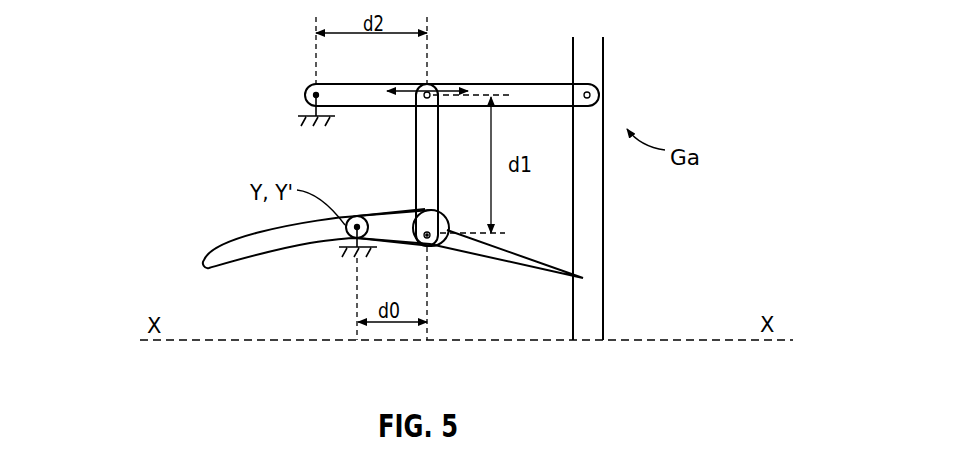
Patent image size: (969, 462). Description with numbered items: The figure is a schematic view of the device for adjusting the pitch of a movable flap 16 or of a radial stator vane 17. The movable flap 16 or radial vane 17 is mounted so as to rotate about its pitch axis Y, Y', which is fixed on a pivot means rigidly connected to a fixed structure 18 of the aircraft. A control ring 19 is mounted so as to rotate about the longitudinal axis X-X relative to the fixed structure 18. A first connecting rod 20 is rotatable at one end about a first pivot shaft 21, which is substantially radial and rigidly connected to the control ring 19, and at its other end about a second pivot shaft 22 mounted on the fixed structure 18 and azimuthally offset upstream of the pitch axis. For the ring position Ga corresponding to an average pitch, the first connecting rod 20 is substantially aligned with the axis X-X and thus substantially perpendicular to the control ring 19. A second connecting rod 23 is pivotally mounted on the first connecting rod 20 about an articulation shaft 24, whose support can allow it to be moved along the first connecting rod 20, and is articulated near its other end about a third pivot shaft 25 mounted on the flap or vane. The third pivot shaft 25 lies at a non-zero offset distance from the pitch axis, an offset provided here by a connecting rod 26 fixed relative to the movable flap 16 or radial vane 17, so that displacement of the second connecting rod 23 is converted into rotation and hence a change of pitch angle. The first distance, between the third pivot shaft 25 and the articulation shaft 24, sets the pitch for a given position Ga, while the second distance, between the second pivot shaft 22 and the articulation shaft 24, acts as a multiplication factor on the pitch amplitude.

The movable flap 16 is at (342, 222).
The radial vane 17 is at (233, 240).
The fixed structure 18 is at (297, 120).
The control ring 19 is at (587, 215).
The first connecting rod 20 is at (557, 93).
The first pivot shaft 21 is at (592, 93).
The second pivot shaft 22 is at (308, 97).
The second connecting rod 23 is at (416, 140).
The articulation shaft 24 is at (428, 84).
The third pivot shaft 25 is at (438, 245).
The connecting rod 26 is at (400, 248).